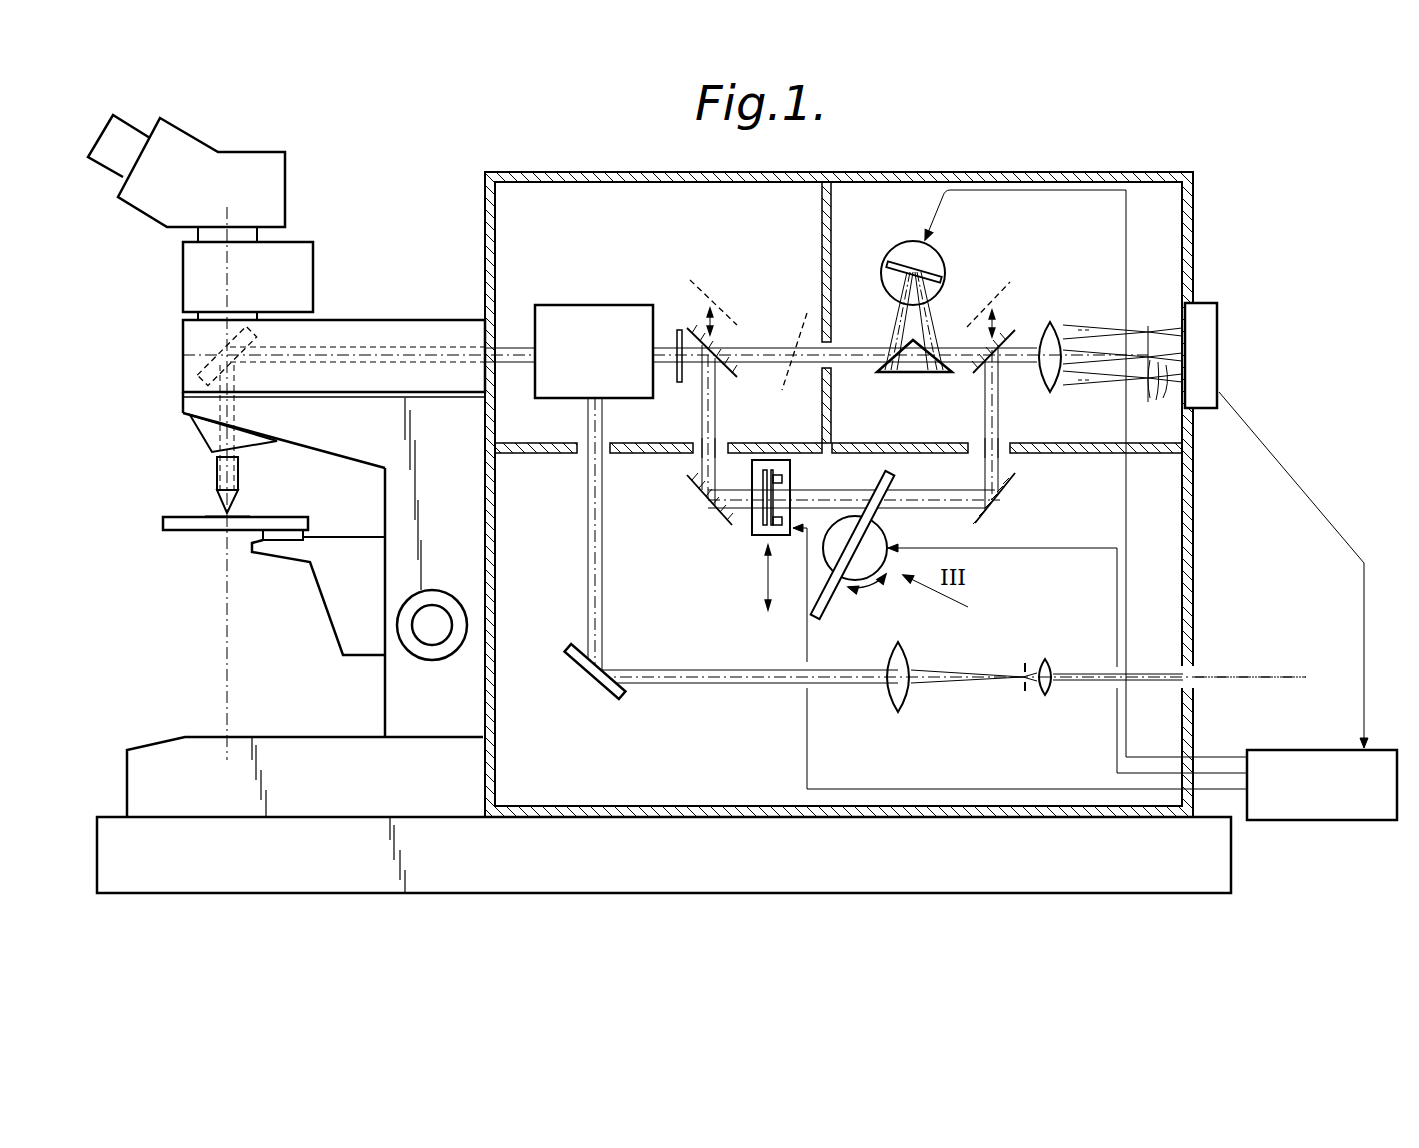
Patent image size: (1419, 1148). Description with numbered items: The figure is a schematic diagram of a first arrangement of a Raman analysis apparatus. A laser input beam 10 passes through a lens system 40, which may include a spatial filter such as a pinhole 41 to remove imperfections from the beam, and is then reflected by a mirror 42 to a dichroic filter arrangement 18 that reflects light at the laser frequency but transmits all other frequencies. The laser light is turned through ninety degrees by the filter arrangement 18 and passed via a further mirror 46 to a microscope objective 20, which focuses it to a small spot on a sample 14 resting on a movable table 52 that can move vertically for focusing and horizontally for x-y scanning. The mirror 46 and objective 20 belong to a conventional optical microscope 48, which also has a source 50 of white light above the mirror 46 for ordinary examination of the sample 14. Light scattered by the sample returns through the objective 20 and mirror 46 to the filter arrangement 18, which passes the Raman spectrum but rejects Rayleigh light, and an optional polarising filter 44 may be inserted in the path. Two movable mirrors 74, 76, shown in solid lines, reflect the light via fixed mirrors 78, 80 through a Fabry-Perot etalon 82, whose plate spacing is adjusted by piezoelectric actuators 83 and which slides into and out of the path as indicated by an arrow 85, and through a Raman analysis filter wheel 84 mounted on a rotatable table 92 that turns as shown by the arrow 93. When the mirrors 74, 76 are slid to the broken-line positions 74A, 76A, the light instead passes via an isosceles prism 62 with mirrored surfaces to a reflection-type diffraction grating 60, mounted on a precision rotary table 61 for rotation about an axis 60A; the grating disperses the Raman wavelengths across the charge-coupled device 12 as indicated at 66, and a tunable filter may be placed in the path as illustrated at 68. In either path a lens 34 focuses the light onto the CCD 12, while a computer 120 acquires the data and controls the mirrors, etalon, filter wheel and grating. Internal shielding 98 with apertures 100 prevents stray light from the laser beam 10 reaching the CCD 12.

The laser input beam 10 is at (1207, 682).
The charge-coupled device (CCD) 12 is at (1217, 329).
The sample 14 is at (231, 513).
The dichroic filter arrangement 18 is at (573, 305).
The microscope objective 20 is at (217, 475).
The lens 34 is at (1053, 338).
The lens system 40 is at (1038, 687).
The pinhole 41 is at (1023, 670).
The mirror 42 is at (593, 685).
The polarising filter 44 is at (677, 383).
The mirror 46 is at (197, 366).
The optical microscope 48 is at (315, 208).
The source of white light 50 is at (314, 268).
The movable table 52 is at (204, 524).
The reflection-type diffraction grating 60 is at (905, 260).
The axis 60A is at (913, 273).
The precision rotary table 61 is at (880, 283).
The isosceles prism 62 is at (920, 373).
The dispersion across the CCD 66 is at (1122, 378).
The tunable filter position 68 is at (802, 323).
The movable mirror 74 is at (731, 378).
The broken-line position of mirror 74A is at (698, 288).
The movable mirror 76 is at (1018, 335).
The broken-line position of mirror 76A is at (1005, 288).
The fixed mirror 78 is at (687, 477).
The fixed mirror 80 is at (1015, 480).
The Fabry-Perot etalon 82 is at (758, 538).
The piezoelectric actuators 83 is at (782, 481).
The arrow 85 is at (767, 578).
The rotatable table 92 is at (887, 535).
The arrow 93 is at (872, 585).
The Raman analysis filter wheel 84 is at (827, 612).
The internal shielding 98 is at (867, 443).
The apertures 100 is at (725, 445).
The computer 120 is at (1336, 822).